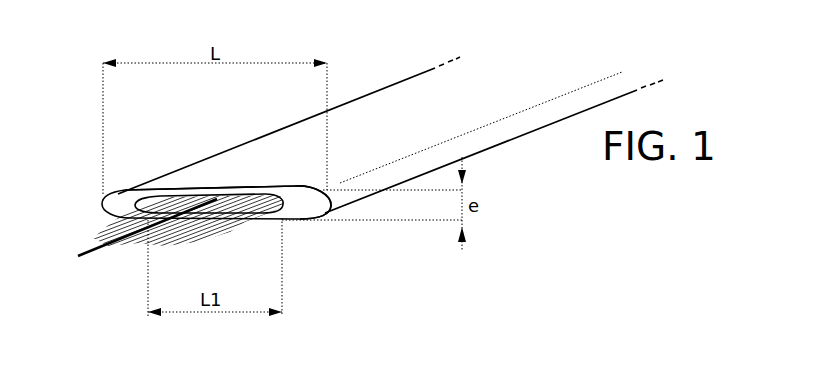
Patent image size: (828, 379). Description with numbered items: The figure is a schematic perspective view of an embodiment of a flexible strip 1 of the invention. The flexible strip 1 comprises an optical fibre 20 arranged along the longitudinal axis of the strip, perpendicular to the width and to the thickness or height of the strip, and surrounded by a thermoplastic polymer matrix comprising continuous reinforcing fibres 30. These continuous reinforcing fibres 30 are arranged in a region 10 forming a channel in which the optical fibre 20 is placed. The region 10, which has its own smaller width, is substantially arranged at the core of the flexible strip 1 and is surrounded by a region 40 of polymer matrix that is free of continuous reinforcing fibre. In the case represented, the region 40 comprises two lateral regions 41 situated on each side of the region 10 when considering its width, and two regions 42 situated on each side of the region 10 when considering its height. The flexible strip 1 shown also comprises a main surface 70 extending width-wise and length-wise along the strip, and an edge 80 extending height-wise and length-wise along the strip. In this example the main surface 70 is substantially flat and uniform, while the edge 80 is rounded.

The flexible strip 1 is at (374, 108).
The region 10 is at (134, 197).
The optical fibre 20 is at (84, 247).
The continuous reinforcing fibres 30 is at (229, 224).
The region of polymer matrix free of continuous reinforcing fibre 40 is at (316, 222).
The lateral regions 41 is at (291, 214).
The regions 42 is at (188, 186).
The main surface 70 is at (250, 150).
The edge 80 is at (505, 131).